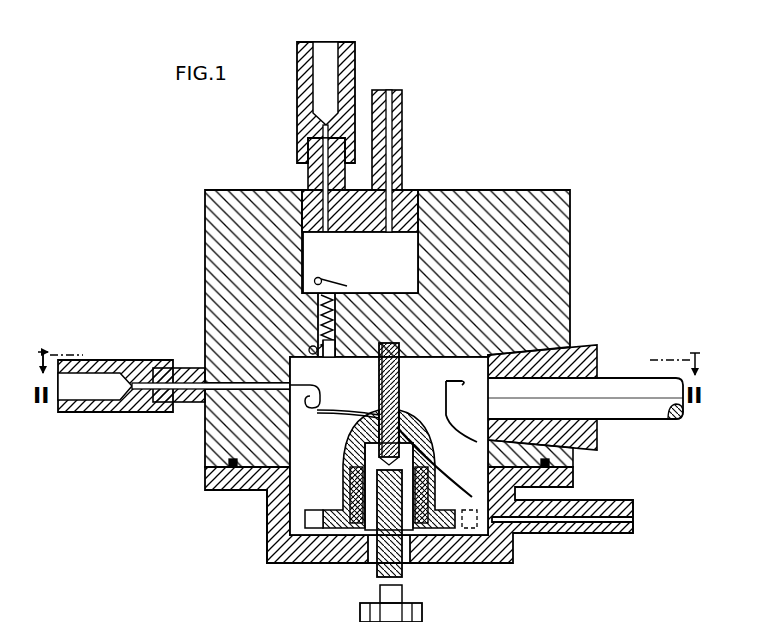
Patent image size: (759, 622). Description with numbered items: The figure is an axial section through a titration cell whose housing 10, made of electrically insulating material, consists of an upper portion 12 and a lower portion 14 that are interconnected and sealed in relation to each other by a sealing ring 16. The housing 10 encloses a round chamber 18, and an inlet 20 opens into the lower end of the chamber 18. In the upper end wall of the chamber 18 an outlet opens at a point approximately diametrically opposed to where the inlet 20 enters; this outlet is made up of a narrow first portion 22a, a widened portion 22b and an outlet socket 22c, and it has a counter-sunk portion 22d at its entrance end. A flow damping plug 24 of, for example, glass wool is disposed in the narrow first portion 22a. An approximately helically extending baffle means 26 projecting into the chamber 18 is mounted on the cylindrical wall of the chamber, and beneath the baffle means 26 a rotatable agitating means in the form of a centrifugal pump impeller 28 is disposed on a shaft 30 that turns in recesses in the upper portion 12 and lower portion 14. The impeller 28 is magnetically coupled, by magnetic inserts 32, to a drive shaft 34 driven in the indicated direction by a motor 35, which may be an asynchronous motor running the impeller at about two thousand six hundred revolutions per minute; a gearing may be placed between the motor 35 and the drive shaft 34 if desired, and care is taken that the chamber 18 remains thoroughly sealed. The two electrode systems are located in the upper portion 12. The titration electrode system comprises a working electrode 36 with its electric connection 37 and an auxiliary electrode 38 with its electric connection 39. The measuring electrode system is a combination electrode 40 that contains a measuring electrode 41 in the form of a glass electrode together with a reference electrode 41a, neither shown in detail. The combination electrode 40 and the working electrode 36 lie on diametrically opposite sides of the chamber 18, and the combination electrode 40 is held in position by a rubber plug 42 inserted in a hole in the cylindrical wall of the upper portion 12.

The housing 10 is at (419, 381).
The upper portion 12 is at (556, 262).
The lower portion 14 is at (568, 479).
The sealing ring 16 is at (552, 463).
The chamber 18 is at (298, 500).
The inlet 20 is at (590, 520).
The first portion 22a is at (389, 437).
The widened portion 22b is at (360, 215).
The outlet socket 22c is at (393, 98).
The counter-sunk portion 22d is at (334, 360).
The flow damping plug 24 is at (323, 281).
The baffle means 26 is at (360, 414).
The centrifugal pump impeller 28 is at (347, 456).
The shaft 30 is at (401, 378).
The magnetic inserts 32 is at (347, 486).
The drive shaft 34 is at (380, 574).
The motor 35 is at (424, 612).
The working electrode 36 is at (306, 413).
The electric connection 37 is at (132, 414).
The auxiliary electrode 38 is at (325, 250).
The electric connection 39 is at (296, 89).
The combination electrode 40 is at (625, 384).
The measuring electrode 41 is at (440, 439).
The reference electrode 41a is at (456, 415).
The rubber plug 42 is at (578, 348).